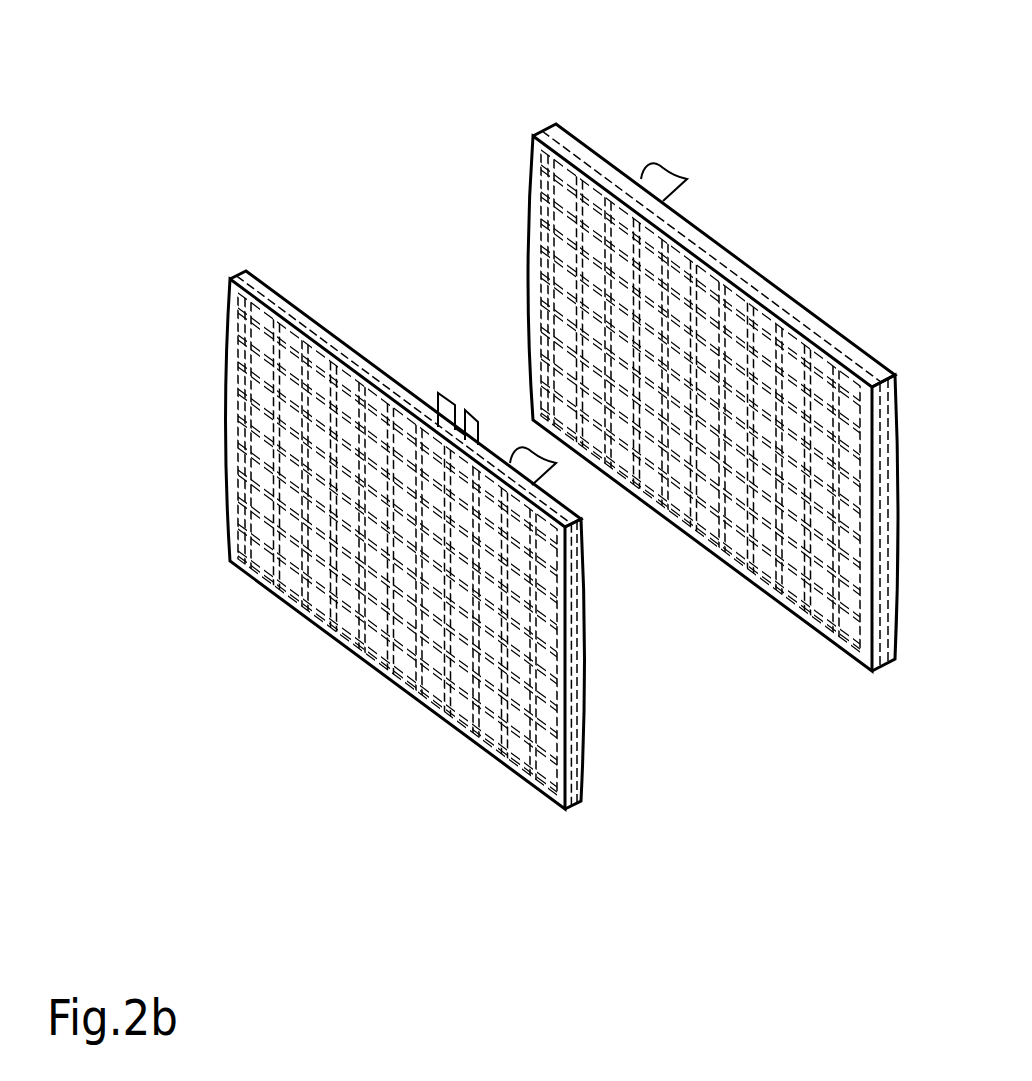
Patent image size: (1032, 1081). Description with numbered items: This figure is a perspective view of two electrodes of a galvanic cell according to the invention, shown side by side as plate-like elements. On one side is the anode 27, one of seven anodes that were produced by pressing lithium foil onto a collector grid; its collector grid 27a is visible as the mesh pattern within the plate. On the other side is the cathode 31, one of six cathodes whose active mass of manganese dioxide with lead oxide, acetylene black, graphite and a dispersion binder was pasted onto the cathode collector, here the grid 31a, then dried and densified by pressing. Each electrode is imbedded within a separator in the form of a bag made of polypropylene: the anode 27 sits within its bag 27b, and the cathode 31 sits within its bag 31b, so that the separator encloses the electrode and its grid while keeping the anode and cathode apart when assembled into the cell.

The anode 27 is at (315, 590).
The collector grid 27a is at (276, 495).
The bag 27b is at (229, 360).
The cathode 31 is at (622, 342).
The grid 31a is at (565, 290).
The bag 31b is at (543, 132).